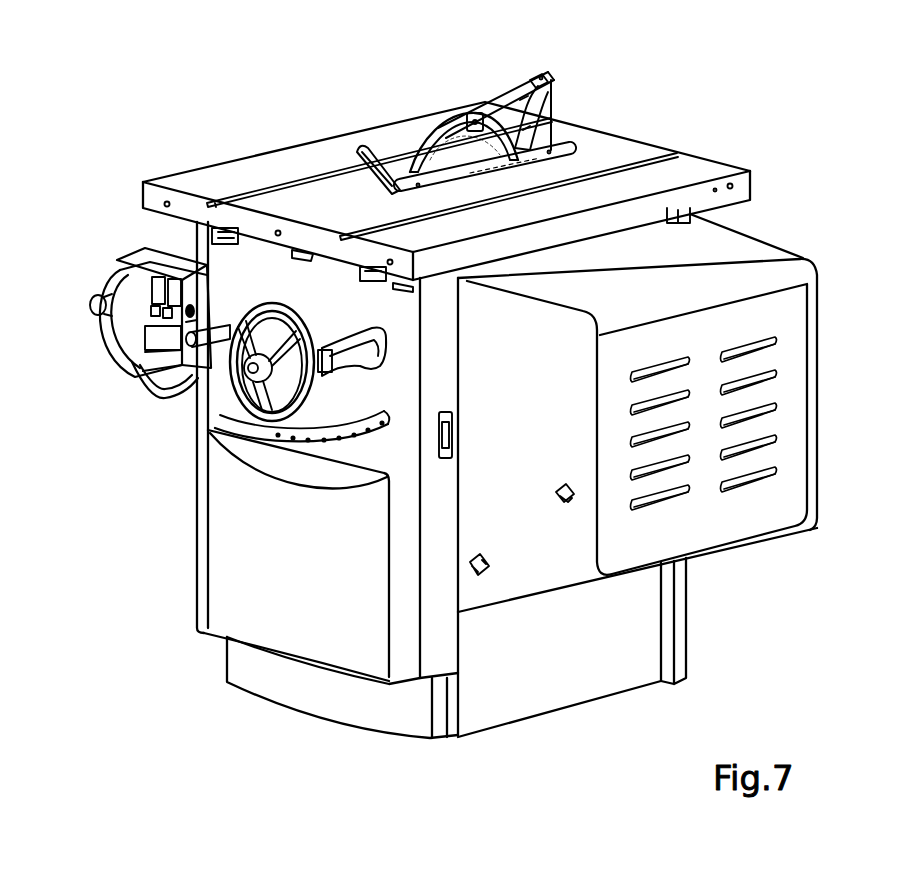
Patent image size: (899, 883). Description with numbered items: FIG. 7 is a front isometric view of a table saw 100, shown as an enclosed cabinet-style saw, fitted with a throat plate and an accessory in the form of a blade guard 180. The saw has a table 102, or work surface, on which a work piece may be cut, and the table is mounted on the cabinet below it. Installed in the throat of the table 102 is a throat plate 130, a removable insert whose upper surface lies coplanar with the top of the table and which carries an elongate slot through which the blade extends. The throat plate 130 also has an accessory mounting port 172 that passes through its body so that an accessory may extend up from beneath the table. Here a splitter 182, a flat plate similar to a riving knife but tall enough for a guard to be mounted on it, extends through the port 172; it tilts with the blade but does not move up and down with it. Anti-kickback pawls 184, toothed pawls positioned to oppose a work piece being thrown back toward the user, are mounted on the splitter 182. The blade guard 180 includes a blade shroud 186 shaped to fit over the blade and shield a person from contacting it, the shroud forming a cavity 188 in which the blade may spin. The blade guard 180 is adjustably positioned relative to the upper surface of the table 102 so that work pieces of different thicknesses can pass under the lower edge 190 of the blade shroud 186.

The table saw 100 is at (104, 83).
The table 102 is at (221, 161).
The throat plate 130 is at (472, 197).
The accessory mounting port 172 is at (527, 164).
The blade guard 180 is at (553, 93).
The splitter 182 is at (553, 108).
The anti-kickback pawls 184 is at (553, 120).
The blade shroud 186 is at (433, 188).
The cavity 188 is at (455, 140).
The lower edge 190 is at (412, 152).